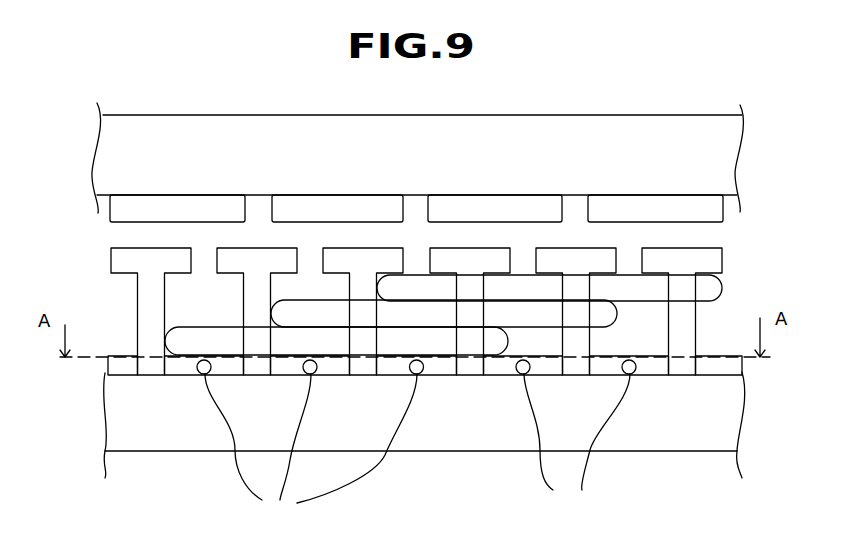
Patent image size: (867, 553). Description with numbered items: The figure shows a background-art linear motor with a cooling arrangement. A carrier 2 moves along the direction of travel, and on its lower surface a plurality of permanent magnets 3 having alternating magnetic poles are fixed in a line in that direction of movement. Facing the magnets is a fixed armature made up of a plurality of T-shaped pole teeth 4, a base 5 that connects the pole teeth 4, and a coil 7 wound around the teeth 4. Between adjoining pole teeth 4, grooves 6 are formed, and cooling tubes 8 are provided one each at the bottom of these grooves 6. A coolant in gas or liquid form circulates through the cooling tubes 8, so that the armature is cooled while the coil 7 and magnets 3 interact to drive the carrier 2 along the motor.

The carrier 2 is at (715, 153).
The permanent magnets 3 is at (710, 208).
The pole teeth 4 is at (152, 333).
The base 5 is at (165, 440).
The grooves 6 is at (202, 316).
The coil 7 is at (187, 340).
The cooling tubes 8 is at (416, 443).